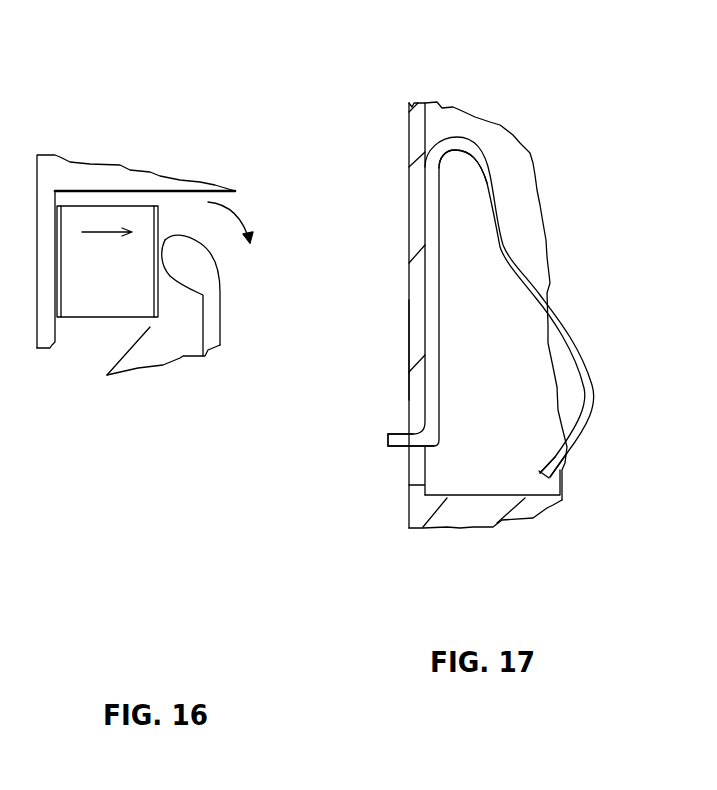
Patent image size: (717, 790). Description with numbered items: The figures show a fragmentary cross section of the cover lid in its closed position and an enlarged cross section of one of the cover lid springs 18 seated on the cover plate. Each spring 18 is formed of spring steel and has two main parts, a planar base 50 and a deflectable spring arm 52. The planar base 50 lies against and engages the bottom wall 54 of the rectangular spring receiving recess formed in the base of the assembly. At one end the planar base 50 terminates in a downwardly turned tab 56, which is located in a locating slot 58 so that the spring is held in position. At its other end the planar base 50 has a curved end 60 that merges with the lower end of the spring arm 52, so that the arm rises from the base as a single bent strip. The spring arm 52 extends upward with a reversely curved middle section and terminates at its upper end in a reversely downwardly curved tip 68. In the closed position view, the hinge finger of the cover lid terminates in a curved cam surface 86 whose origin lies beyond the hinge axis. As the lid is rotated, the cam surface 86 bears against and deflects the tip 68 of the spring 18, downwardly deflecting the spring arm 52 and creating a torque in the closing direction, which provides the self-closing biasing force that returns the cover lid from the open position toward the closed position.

In FIG. 16, the cover lid spring 18 is at (110, 318).
In FIG. 17, the cover lid spring 18 is at (512, 218).
In FIG. 16, the curved cam surface 86 is at (165, 240).
In FIG. 17, the planar base 50 is at (430, 238).
In FIG. 17, the spring arm 52 is at (570, 333).
In FIG. 17, the bottom wall 54 is at (415, 339).
In FIG. 17, the downwardly turned tab 56 is at (396, 437).
In FIG. 17, the locating slot 58 is at (263, 507).
In FIG. 17, the curved end 60 is at (450, 145).
In FIG. 17, the reversely downwardly curved tip 68 is at (587, 423).